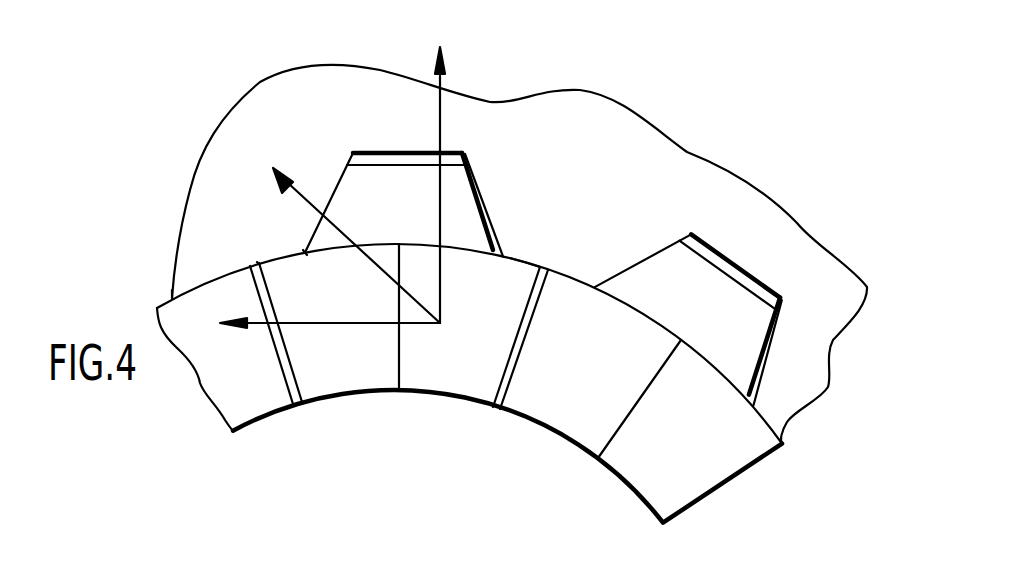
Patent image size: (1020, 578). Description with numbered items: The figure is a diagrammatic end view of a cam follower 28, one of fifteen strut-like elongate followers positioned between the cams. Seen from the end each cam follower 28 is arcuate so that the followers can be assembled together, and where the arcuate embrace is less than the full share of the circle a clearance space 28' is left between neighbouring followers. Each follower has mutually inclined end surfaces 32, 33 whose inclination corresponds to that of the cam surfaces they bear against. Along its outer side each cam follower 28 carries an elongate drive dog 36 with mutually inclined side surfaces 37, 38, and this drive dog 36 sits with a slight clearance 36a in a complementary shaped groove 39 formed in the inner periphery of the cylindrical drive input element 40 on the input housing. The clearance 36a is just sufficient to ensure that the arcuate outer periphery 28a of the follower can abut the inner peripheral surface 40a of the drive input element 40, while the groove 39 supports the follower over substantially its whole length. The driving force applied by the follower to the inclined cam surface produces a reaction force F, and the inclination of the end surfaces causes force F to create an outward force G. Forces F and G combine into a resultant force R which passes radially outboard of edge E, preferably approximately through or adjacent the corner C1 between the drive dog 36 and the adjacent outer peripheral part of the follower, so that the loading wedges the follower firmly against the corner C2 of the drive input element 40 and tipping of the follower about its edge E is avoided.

The cam follower 28 is at (456, 383).
The clearance space 28' is at (405, 379).
The arcuate outer periphery 28a is at (530, 263).
The end surface 32 is at (302, 363).
The end surface 33 is at (505, 335).
The drive dog 36 is at (555, 220).
The clearance 36a is at (483, 203).
The side surface 37 is at (469, 180).
The side surface 38 is at (345, 182).
The groove 39 is at (380, 153).
The drive input element 40 is at (258, 102).
The inner peripheral surface 40a is at (202, 287).
The edge E is at (258, 260).
The corner C1 is at (308, 258).
The corner C2 is at (302, 248).
The reaction force F is at (321, 320).
The outward force G is at (442, 163).
The resultant force R is at (351, 228).